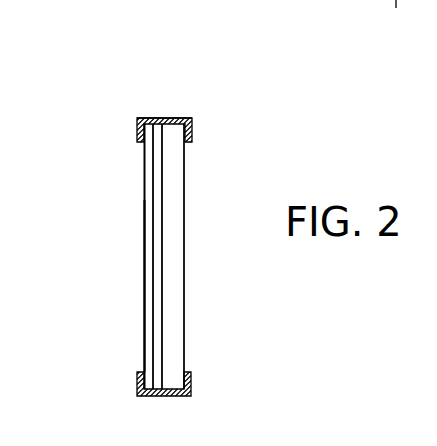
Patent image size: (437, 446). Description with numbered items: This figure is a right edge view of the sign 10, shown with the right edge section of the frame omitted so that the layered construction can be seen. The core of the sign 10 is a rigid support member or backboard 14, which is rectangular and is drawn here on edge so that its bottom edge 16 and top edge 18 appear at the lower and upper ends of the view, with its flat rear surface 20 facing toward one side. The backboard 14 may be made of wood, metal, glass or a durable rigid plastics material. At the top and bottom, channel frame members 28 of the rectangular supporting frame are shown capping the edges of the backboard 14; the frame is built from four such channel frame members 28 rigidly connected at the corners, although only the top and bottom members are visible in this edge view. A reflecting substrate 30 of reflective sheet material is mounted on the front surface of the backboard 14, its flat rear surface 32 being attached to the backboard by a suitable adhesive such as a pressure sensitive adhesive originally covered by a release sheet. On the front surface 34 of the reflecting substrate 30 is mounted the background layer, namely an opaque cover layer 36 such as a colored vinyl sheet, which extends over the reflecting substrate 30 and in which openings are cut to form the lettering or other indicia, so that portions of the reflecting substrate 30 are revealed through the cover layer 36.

The sign 10 is at (207, 134).
The backboard 14 is at (174, 193).
The bottom edge 16 is at (173, 396).
The top edge 18 is at (184, 119).
The rear surface 20 is at (185, 264).
The channel frame member 28 is at (150, 117).
The reflecting substrate 30 is at (146, 183).
The rear surface of the reflecting substrate 32 is at (163, 304).
The front surface of the reflecting substrate 34 is at (144, 288).
The opaque cover layer 36 is at (144, 350).